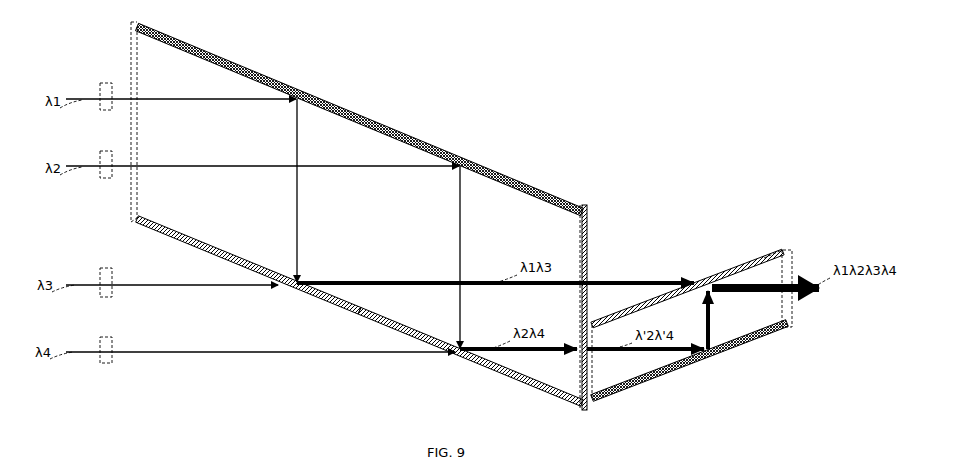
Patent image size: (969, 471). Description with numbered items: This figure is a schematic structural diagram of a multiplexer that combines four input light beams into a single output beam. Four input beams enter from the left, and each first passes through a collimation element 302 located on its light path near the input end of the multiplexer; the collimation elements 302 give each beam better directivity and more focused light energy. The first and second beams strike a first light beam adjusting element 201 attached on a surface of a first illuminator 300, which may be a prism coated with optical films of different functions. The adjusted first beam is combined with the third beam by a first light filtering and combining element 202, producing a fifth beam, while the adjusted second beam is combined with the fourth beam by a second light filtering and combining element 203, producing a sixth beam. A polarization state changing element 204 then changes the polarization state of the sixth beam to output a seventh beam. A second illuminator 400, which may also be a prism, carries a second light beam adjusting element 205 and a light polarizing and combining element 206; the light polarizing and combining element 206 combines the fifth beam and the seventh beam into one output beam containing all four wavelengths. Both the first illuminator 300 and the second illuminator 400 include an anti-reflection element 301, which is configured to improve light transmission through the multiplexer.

The first light beam adjusting element 201 is at (374, 129).
The first light filtering and combining element 202 is at (214, 254).
The second light filtering and combining element 203 is at (370, 320).
The polarization state changing element 204 is at (585, 318).
The second light beam adjusting element 205 is at (792, 334).
The light polarizing and combining element 206 is at (758, 256).
The first illuminator 300 is at (572, 238).
The anti-reflection element 301 is at (140, 137).
The collimation element 302 is at (100, 83).
The second illuminator 400 is at (737, 323).